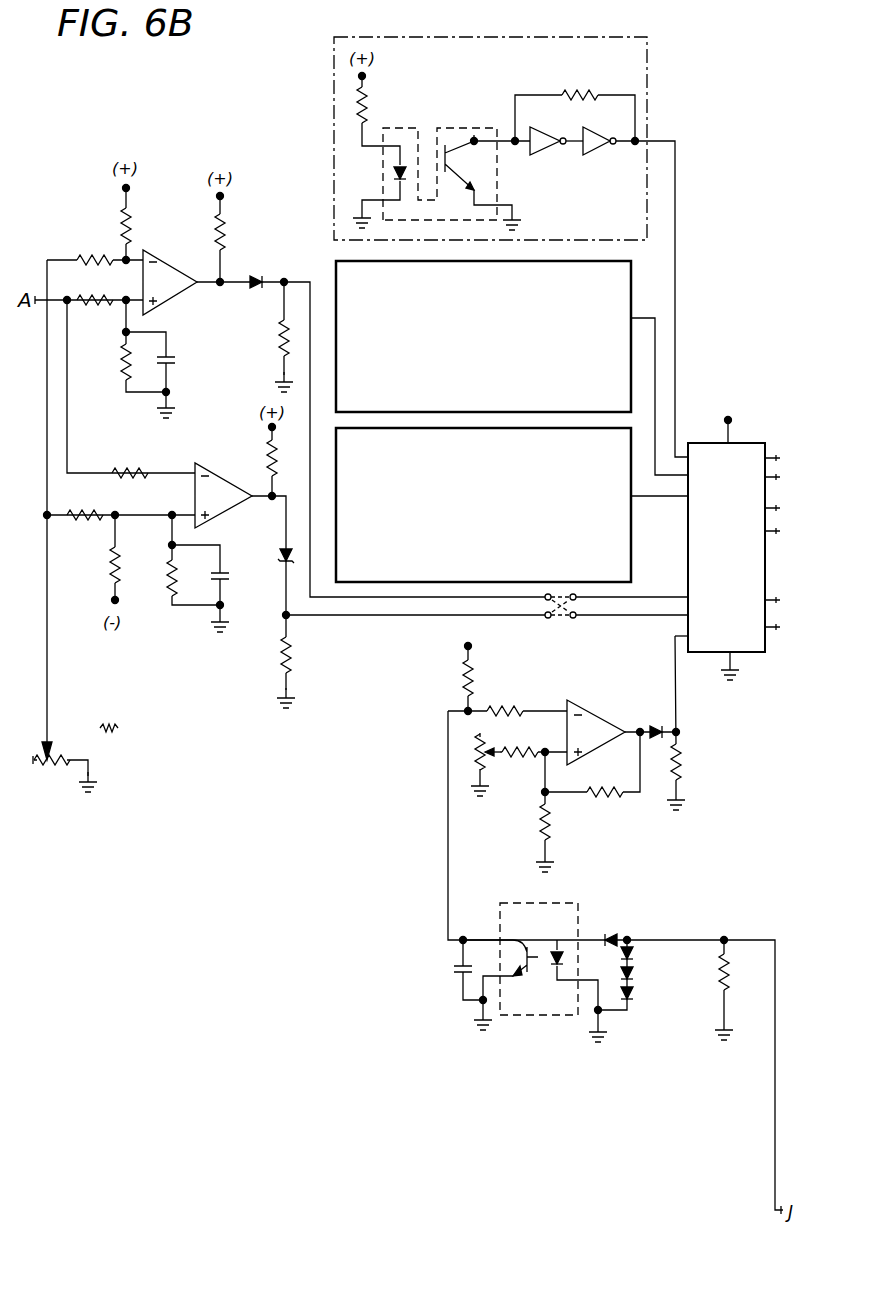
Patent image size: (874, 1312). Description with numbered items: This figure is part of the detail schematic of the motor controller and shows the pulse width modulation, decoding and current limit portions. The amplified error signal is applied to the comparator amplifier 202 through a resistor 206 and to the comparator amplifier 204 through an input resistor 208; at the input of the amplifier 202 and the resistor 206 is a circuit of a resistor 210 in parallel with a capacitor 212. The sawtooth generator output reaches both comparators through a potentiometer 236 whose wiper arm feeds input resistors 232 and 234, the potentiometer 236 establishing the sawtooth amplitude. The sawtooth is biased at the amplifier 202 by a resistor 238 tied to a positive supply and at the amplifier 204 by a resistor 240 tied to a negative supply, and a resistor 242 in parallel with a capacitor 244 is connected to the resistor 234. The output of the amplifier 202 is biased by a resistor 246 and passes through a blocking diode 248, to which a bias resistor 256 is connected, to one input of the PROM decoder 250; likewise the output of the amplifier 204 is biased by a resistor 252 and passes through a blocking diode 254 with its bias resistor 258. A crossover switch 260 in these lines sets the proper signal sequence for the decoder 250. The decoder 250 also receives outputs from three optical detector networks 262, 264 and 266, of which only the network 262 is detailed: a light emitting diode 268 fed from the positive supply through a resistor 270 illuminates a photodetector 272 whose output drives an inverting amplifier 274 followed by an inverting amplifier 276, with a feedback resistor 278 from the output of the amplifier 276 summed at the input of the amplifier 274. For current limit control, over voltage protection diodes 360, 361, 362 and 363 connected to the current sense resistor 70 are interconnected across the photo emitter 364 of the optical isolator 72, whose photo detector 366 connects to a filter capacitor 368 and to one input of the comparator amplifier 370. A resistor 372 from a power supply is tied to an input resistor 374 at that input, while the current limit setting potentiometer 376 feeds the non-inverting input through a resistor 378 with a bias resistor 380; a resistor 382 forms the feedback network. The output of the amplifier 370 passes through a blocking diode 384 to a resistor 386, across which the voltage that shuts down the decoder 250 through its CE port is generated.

The input resistor 232 is at (92, 257).
The resistor 206 is at (103, 298).
The resistor 238 is at (126, 216).
The comparator amplifier 202 is at (180, 266).
The resistor 246 is at (221, 224).
The blocking diode 248 is at (258, 274).
The bias resistor 256 is at (280, 334).
The resistor 210 is at (122, 364).
The capacitor 212 is at (170, 362).
The input resistor 208 is at (132, 468).
The comparator amplifier 204 is at (217, 468).
The resistor 252 is at (268, 448).
The input resistor 234 is at (88, 511).
The resistor 240 is at (113, 568).
The resistor 242 is at (168, 573).
The capacitor 244 is at (224, 572).
The blocking diode 254 is at (282, 560).
The bias resistor 258 is at (281, 660).
The potentiometer 236 is at (60, 766).
The optical detector network 262 is at (648, 72).
The resistor 270 is at (370, 96).
The light emitting diode 268 is at (392, 176).
The photodetector 272 is at (462, 128).
The inverting amplifier 274 is at (546, 156).
The inverting amplifier 276 is at (596, 152).
The feedback resistor 278 is at (580, 92).
The optical detector network 264 is at (500, 342).
The optical detector network 266 is at (500, 510).
The programmable read only memory decoder 250 is at (746, 571).
The crossover switch 260 is at (566, 620).
The resistor 372 is at (464, 686).
The input resistor 374 is at (504, 706).
The comparator amplifier 370 is at (585, 706).
The current limit setting potentiometer 376 is at (490, 750).
The resistor 378 is at (526, 762).
The bias resistor 380 is at (551, 830).
The resistor 382 is at (612, 800).
The blocking diode 384 is at (656, 725).
The resistor 386 is at (681, 766).
The optical isolator 72 is at (570, 903).
The filter capacitor 368 is at (456, 972).
The photo detector 366 is at (522, 978).
The photo emitter 364 is at (552, 950).
The over voltage protection diode 360 is at (616, 932).
The over voltage protection diode 361 is at (634, 955).
The over voltage protection diode 362 is at (634, 976).
The over voltage protection diode 363 is at (634, 998).
The current sense resistor 70 is at (729, 992).